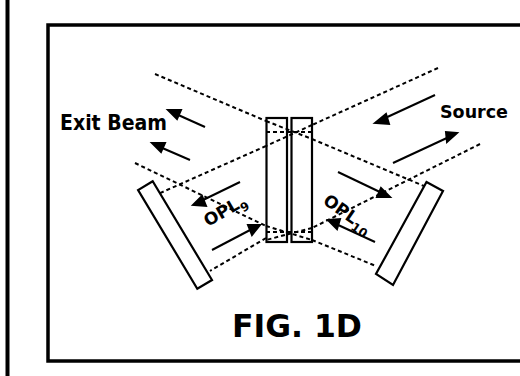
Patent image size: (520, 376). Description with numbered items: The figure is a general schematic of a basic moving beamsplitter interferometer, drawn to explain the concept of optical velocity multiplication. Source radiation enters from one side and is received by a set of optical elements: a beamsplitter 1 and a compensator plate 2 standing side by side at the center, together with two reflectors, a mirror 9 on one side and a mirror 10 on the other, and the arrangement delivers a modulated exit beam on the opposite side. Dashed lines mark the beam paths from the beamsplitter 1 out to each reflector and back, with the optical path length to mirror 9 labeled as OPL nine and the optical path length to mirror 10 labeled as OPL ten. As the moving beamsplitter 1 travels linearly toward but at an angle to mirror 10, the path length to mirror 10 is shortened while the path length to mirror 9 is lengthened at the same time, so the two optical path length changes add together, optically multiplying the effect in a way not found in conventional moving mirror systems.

The beamsplitter 1 is at (296, 184).
The compensator plate 2 is at (284, 184).
The mirror 9 is at (168, 243).
The mirror 10 is at (418, 237).